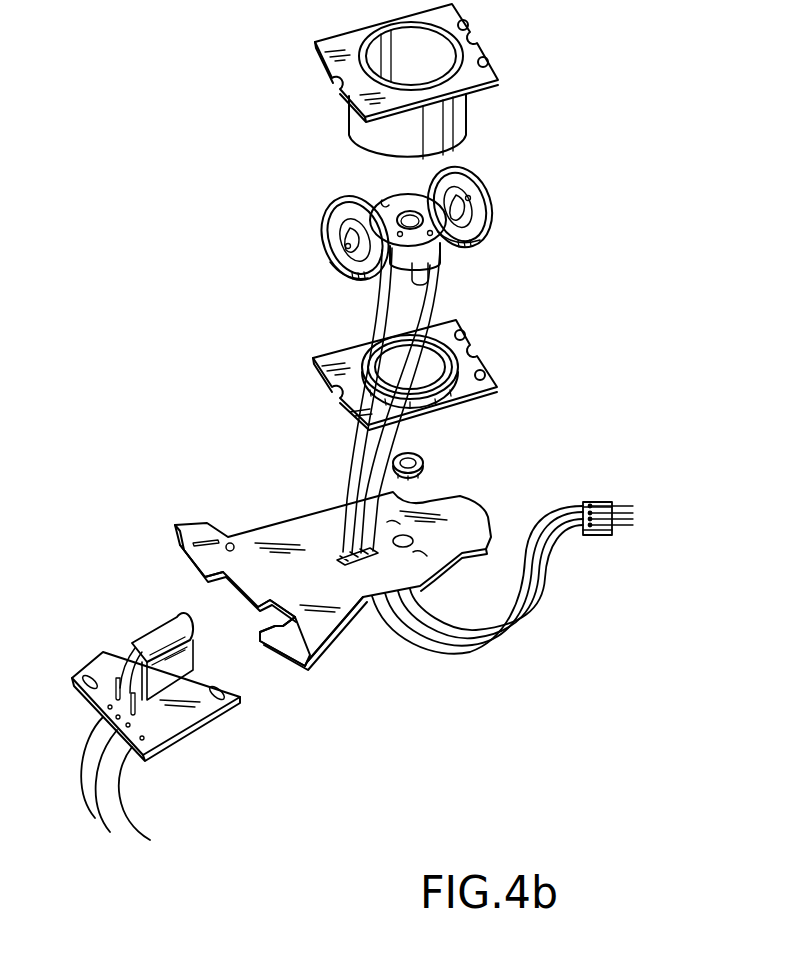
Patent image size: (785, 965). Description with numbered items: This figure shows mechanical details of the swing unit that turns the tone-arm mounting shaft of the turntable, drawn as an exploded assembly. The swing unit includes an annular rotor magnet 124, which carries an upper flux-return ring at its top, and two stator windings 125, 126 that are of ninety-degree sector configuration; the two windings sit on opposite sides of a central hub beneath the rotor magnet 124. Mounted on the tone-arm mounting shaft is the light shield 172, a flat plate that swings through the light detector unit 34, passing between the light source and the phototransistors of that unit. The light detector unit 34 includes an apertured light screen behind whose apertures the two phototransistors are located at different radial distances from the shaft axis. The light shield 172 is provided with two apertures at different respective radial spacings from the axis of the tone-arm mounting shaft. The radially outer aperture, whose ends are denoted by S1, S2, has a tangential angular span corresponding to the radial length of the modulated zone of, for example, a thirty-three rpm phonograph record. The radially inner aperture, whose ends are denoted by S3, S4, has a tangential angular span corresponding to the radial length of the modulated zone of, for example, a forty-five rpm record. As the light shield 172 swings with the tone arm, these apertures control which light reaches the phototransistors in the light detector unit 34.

The rotor magnet 124 is at (383, 143).
The stator winding 125 is at (337, 257).
The stator winding 126 is at (493, 233).
The light shield 172 is at (295, 523).
The end of radially outer aperture S1 is at (205, 580).
The end of radially outer aperture S2 is at (264, 632).
The end of radially inner aperture S3 is at (268, 617).
The end of radially inner aperture S4 is at (318, 641).
The light detector unit 34 is at (153, 618).